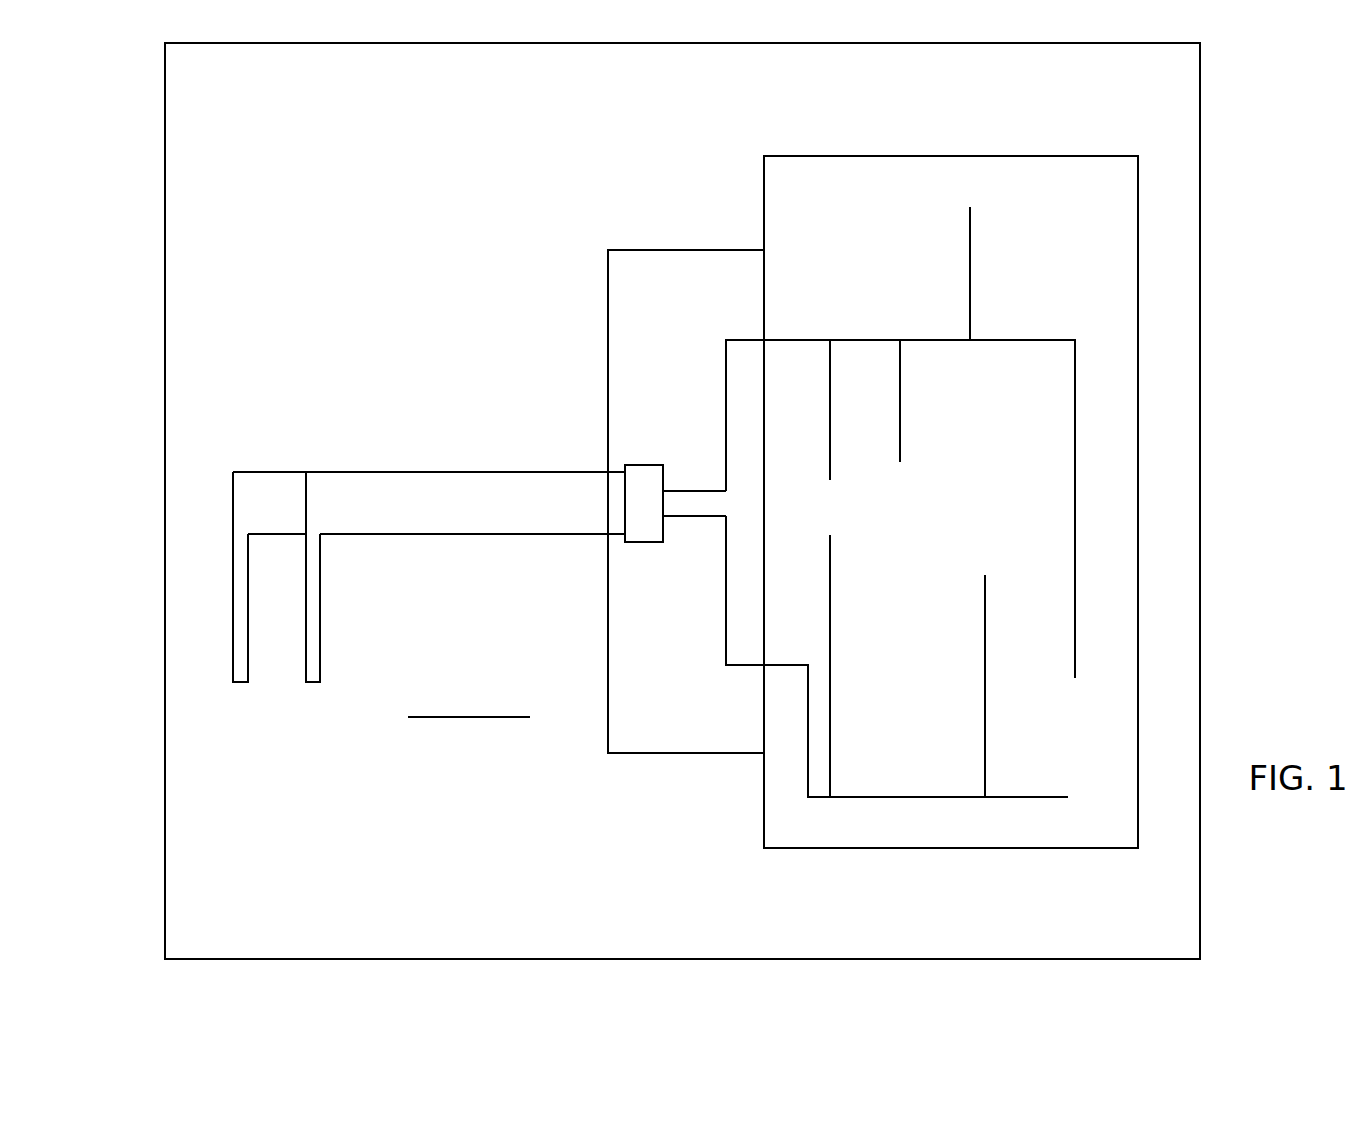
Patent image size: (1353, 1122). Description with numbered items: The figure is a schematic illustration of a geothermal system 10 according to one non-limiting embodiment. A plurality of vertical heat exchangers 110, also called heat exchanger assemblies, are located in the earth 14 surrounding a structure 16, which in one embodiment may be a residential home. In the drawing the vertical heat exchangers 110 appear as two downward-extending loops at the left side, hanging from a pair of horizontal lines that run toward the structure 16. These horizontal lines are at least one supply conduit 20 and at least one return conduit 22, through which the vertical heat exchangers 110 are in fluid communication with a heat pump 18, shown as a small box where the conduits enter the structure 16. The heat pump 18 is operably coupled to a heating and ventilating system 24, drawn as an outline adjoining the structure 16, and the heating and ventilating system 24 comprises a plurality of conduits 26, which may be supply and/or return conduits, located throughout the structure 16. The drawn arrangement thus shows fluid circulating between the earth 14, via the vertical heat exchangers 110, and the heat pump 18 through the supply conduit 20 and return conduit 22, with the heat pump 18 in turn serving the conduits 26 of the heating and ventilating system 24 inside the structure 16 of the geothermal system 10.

The geothermal system 10 is at (128, 268).
The earth 14 is at (469, 699).
The structure 16 is at (764, 202).
The heat pump 18 is at (644, 542).
The supply conduit 20 is at (438, 534).
The return conduit 22 is at (438, 472).
The heating and ventilating system 24 is at (628, 411).
The conduits 26 is at (1075, 508).
The vertical heat exchangers 110 is at (241, 682).